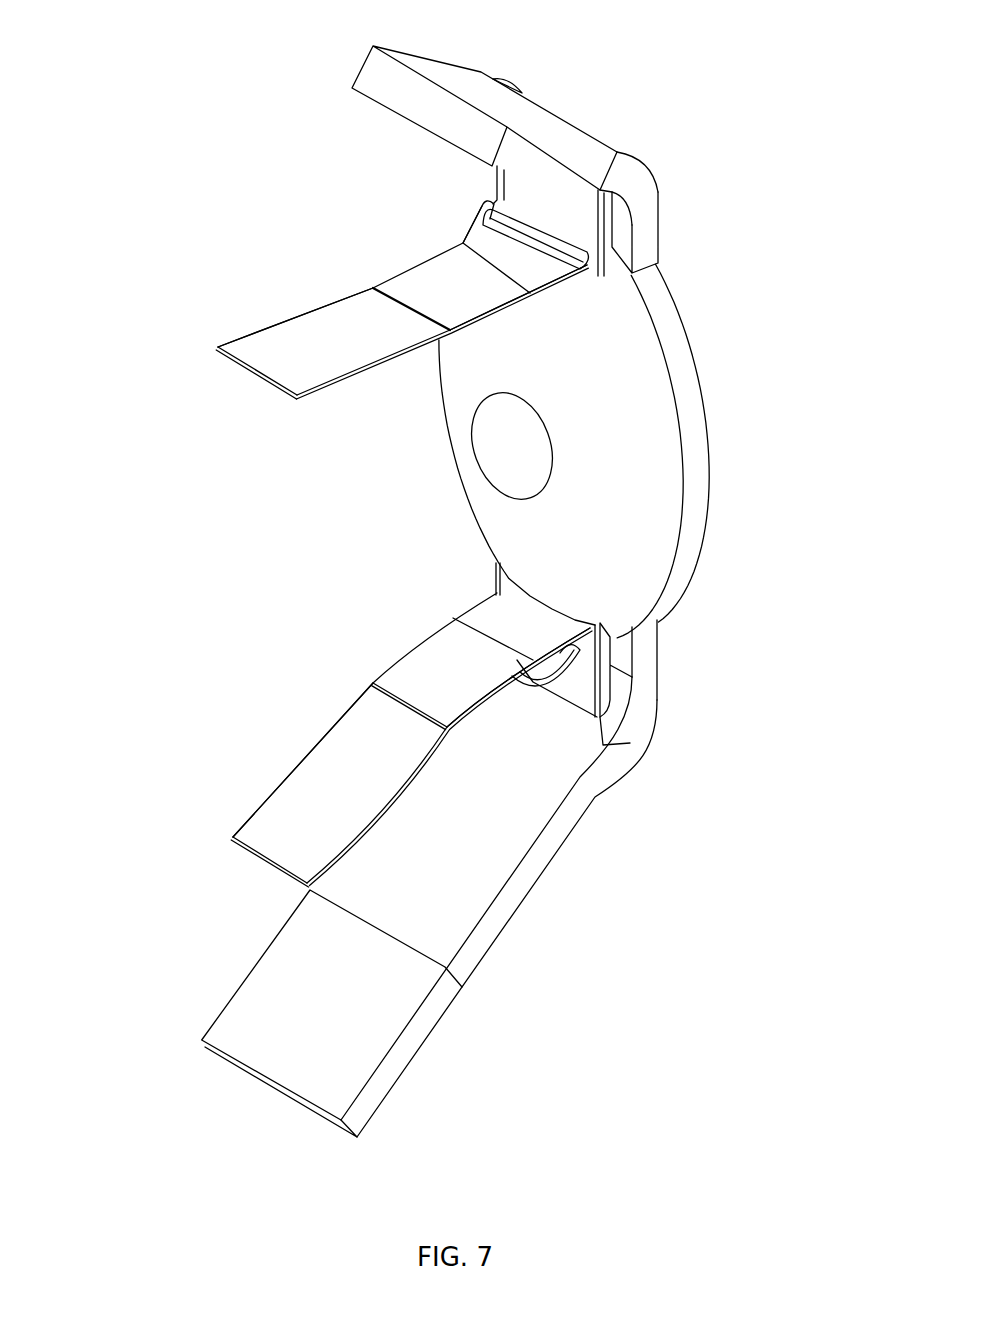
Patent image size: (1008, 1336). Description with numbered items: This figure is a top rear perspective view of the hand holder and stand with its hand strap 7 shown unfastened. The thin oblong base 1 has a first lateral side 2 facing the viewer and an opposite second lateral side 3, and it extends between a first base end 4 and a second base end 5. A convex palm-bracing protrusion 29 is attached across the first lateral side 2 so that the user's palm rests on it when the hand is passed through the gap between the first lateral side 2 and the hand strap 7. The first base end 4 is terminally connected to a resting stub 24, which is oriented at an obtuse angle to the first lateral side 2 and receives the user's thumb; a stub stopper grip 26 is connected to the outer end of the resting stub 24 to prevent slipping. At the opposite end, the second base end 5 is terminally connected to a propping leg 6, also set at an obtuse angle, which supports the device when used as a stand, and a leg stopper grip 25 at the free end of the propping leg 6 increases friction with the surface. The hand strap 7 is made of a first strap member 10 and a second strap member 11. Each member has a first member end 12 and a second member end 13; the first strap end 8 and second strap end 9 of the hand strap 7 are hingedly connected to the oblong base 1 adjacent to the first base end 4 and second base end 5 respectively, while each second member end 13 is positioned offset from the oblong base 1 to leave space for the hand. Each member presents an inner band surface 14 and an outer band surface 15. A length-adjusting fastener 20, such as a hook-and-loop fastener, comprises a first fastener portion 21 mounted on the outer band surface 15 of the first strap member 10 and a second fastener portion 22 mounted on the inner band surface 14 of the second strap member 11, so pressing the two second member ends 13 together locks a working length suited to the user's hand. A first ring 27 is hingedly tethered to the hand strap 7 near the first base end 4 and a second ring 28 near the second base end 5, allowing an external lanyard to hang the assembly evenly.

The oblong base 1 is at (783, 412).
The first lateral side 2 is at (618, 640).
The second lateral side 3 is at (710, 520).
The first base end 4 is at (647, 246).
The second base end 5 is at (648, 647).
The propping leg 6 is at (508, 905).
The hand strap 7 is at (331, 519).
The first strap end 8 is at (549, 272).
The second strap end 9 is at (503, 597).
The first strap member 10 is at (195, 292).
The second strap member 11 is at (204, 783).
The first member end 12 is at (492, 466).
The second member end 13 is at (214, 346).
The inner band surface 14 is at (465, 340).
The outer band surface 15 is at (415, 283).
The length-adjusting fastener 20 is at (295, 546).
The first fastener portion 21 is at (302, 325).
The second fastener portion 22 is at (300, 782).
The resting stub 24 is at (638, 177).
The leg stopper grip 25 is at (230, 1017).
The stub stopper grip 26 is at (372, 74).
The first ring 27 is at (538, 221).
The second ring 28 is at (520, 682).
The palm-bracing protrusion 29 is at (462, 458).